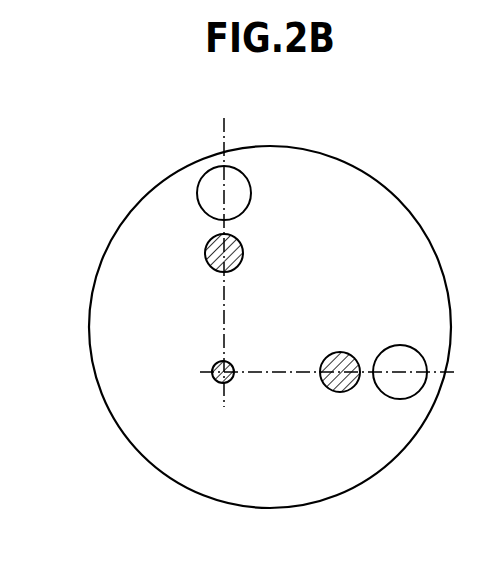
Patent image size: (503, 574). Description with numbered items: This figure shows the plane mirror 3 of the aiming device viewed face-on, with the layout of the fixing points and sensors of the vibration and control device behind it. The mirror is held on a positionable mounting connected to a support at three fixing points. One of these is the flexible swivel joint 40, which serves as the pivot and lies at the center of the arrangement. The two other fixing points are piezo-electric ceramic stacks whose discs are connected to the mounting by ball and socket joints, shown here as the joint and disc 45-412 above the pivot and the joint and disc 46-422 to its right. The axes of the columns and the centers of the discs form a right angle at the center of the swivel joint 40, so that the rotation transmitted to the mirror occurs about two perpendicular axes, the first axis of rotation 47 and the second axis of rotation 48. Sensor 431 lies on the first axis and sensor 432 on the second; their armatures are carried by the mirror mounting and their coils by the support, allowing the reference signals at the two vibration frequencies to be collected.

The plane mirror 3 is at (366, 185).
The ball and socket joint and piezo-electric ceramic disc 45-412 is at (251, 193).
The sensor 431 is at (243, 253).
The first axis of rotation 47 is at (224, 303).
The flexible swivel joint 40 is at (230, 365).
The second axis of rotation 48 is at (280, 376).
The sensor 432 is at (331, 388).
The ball and socket joint and piezo-electric ceramic disc 46-422 is at (400, 345).